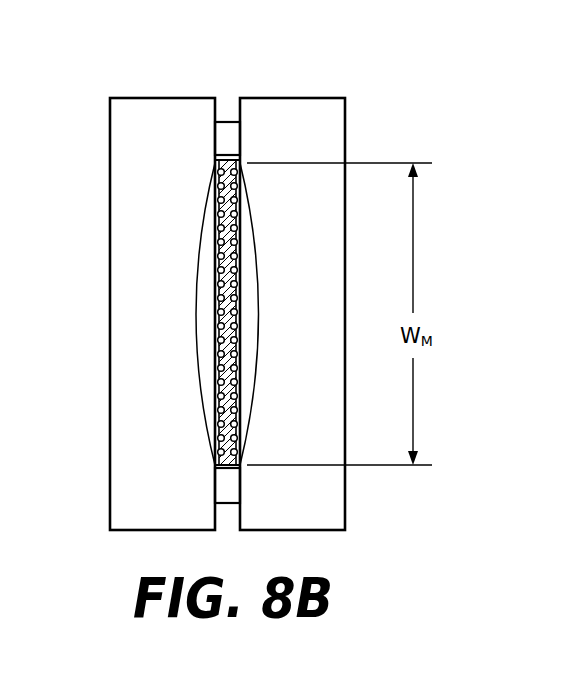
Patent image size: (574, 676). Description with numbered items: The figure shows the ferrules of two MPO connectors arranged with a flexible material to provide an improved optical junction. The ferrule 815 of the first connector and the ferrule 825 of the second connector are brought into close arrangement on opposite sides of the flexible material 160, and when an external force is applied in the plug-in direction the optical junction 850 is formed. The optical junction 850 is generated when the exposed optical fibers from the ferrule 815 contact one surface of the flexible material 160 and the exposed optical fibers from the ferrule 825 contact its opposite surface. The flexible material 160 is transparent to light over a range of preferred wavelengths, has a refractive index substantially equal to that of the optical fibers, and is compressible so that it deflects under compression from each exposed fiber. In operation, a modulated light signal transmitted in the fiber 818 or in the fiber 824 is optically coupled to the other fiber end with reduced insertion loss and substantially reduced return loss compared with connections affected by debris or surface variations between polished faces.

The flexible material 160 is at (227, 173).
The ferrule 815 is at (173, 150).
The ferrule 825 is at (320, 150).
The optical junction 850 is at (196, 274).
The fiber 818 is at (214, 366).
The fiber 824 is at (241, 368).